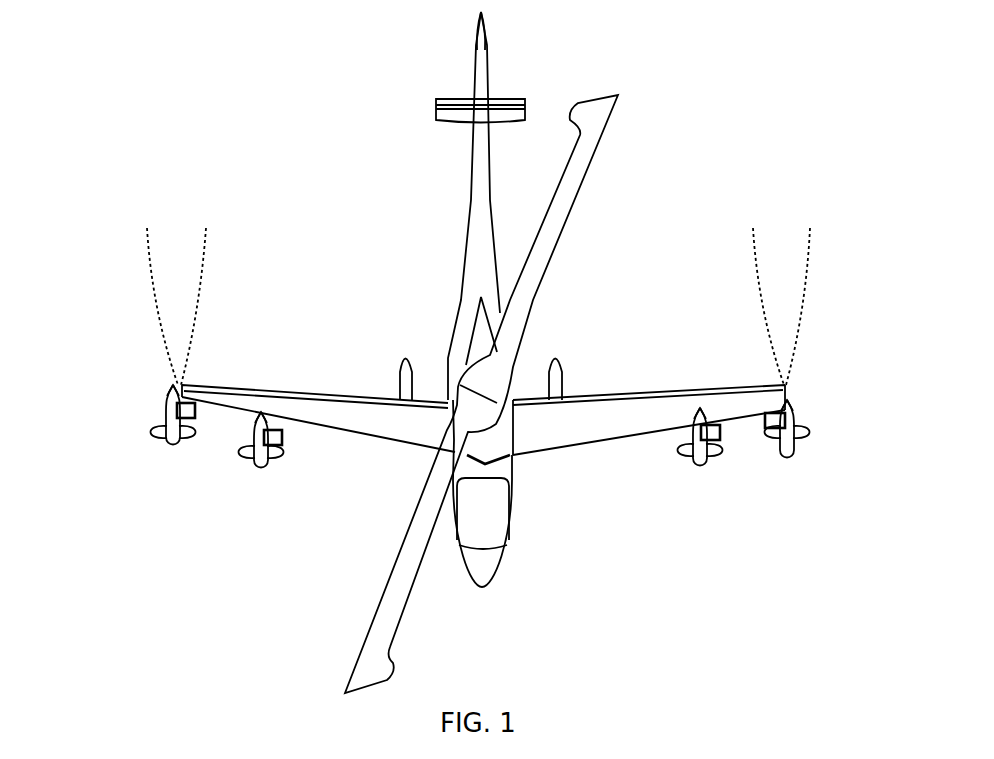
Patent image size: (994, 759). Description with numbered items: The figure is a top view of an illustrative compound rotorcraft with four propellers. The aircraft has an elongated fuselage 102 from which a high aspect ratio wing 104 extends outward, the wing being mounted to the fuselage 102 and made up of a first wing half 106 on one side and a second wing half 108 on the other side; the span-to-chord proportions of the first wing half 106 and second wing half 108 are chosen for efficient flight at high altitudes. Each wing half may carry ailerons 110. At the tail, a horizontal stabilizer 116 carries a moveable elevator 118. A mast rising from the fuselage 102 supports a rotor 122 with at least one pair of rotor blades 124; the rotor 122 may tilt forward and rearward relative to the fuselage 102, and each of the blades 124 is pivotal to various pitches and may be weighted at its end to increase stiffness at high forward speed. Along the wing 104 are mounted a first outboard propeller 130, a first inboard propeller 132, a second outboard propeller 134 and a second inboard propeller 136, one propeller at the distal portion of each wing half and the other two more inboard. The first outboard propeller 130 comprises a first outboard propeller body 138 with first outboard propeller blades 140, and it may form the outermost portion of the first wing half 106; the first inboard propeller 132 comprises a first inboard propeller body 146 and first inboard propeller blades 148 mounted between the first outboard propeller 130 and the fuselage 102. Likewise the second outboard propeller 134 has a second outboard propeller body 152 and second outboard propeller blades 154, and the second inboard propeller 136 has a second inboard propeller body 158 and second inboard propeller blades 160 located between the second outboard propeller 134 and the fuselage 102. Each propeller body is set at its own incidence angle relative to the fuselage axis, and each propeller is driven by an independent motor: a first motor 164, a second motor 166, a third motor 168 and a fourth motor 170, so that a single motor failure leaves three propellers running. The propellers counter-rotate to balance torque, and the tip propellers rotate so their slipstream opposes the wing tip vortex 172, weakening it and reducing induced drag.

The fuselage 102 is at (445, 299).
The wing 104 is at (483, 359).
The first wing half 106 is at (318, 442).
The second wing half 108 is at (649, 478).
The ailerons 110 is at (483, 333).
The horizontal stabilizer 116 is at (537, 95).
The elevator 118 is at (538, 54).
The rotor 122 is at (562, 343).
The rotor blades 124 is at (543, 391).
The first outboard propeller 130 is at (126, 472).
The first inboard propeller 132 is at (246, 498).
The second outboard propeller 134 is at (828, 442).
The second inboard propeller 136 is at (734, 472).
The first outboard propeller body 138 is at (106, 389).
The first outboard propeller blades 140 is at (126, 476).
The first inboard propeller body 146 is at (311, 468).
The first inboard propeller blades 148 is at (192, 518).
The second outboard propeller body 152 is at (845, 404).
The second outboard propeller blades 154 is at (846, 445).
The second inboard propeller body 158 is at (666, 463).
The second inboard propeller blades 160 is at (747, 471).
The first motor 164 is at (119, 342).
The second motor 166 is at (292, 360).
The third motor 168 is at (834, 355).
The fourth motor 170 is at (718, 349).
The wing tip vortex 172 is at (514, 275).